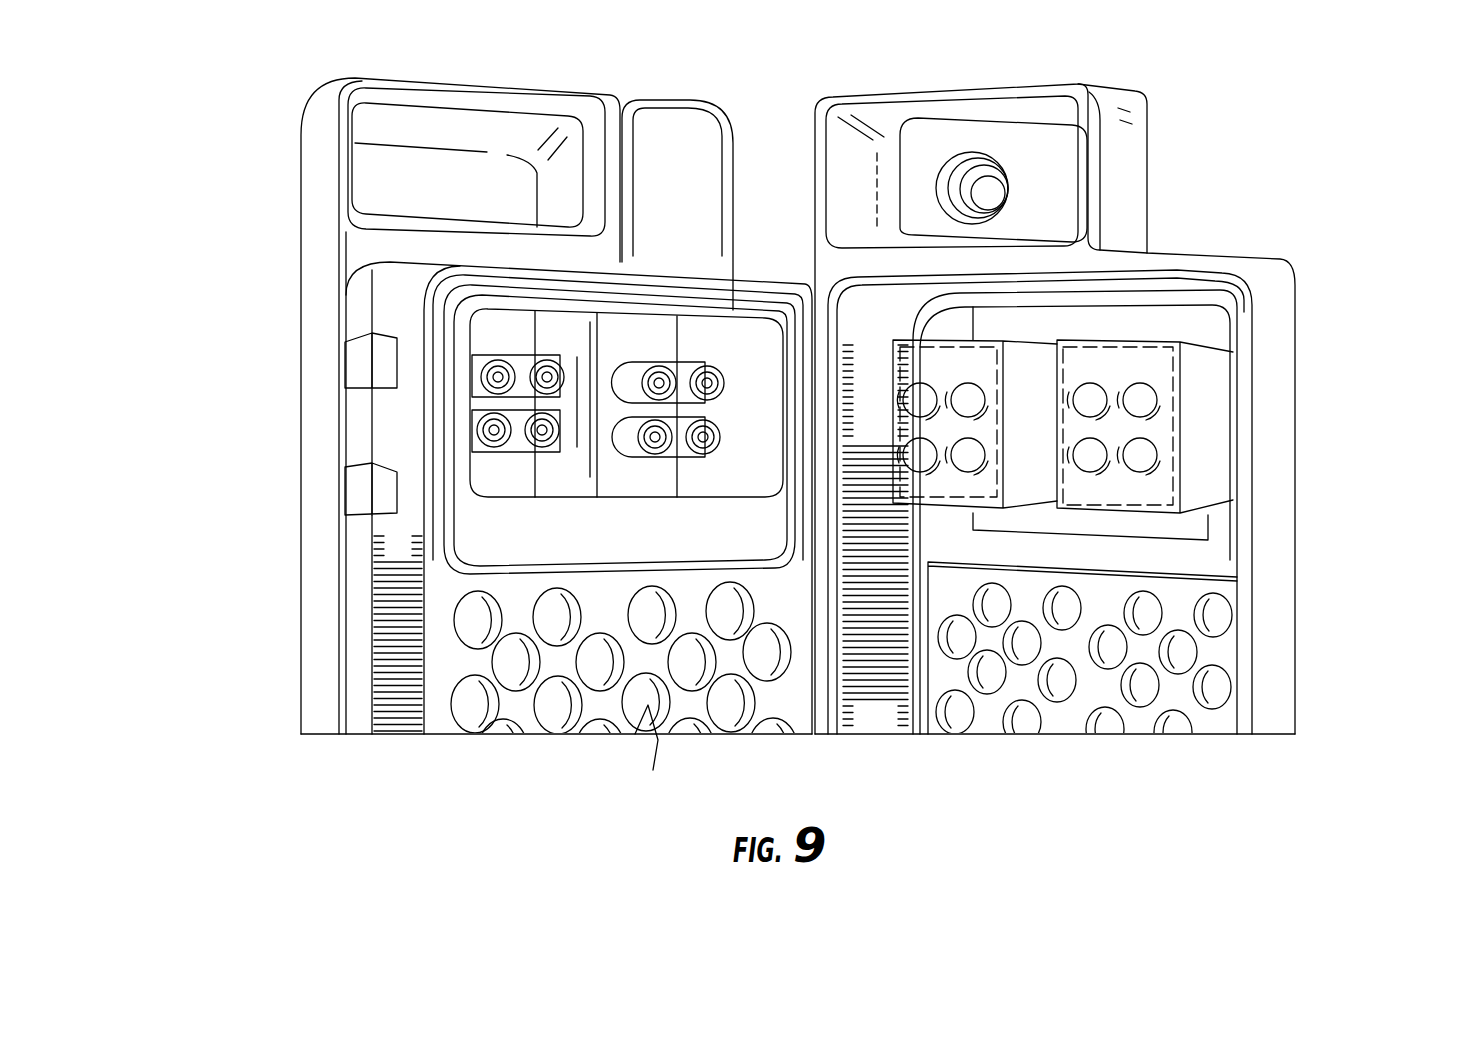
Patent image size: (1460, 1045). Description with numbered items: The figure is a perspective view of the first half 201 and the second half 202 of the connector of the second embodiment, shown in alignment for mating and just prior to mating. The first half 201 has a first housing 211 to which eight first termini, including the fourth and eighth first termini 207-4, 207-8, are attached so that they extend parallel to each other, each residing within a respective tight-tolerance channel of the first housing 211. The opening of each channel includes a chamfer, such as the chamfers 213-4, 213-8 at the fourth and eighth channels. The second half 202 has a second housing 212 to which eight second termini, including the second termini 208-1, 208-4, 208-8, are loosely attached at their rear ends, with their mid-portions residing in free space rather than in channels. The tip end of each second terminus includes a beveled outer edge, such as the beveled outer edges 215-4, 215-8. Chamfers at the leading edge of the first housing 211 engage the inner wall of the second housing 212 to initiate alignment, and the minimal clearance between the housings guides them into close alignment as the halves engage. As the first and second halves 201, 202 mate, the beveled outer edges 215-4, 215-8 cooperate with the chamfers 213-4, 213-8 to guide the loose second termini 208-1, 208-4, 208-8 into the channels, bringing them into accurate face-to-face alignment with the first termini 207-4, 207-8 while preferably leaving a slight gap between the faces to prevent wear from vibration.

The first half of the connector 201 is at (1240, 181).
The second half of the connector 202 is at (233, 146).
The first housing 211 is at (1177, 273).
The second housing 212 is at (482, 535).
The first second terminus 208-1 is at (710, 372).
The fourth second terminus 208-4 is at (478, 377).
The eighth second terminus 208-8 is at (480, 442).
The beveled outer edge 215-4 is at (473, 390).
The beveled outer edge 215-8 is at (475, 410).
The fourth first terminus 207-4 is at (1153, 388).
The eighth first terminus 207-8 is at (1150, 457).
The chamfer 213-4 is at (1145, 425).
The chamfer 213-8 is at (1143, 479).